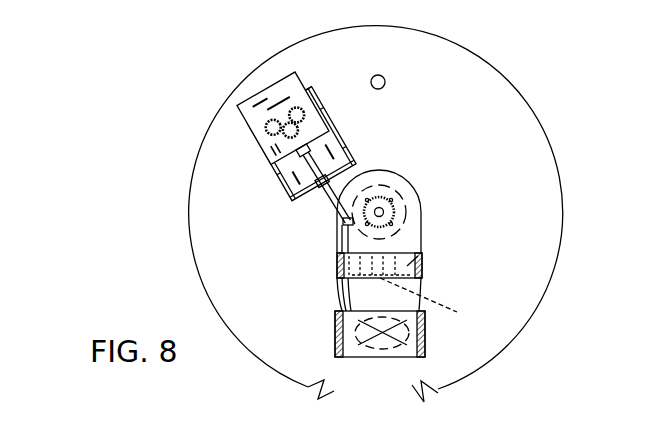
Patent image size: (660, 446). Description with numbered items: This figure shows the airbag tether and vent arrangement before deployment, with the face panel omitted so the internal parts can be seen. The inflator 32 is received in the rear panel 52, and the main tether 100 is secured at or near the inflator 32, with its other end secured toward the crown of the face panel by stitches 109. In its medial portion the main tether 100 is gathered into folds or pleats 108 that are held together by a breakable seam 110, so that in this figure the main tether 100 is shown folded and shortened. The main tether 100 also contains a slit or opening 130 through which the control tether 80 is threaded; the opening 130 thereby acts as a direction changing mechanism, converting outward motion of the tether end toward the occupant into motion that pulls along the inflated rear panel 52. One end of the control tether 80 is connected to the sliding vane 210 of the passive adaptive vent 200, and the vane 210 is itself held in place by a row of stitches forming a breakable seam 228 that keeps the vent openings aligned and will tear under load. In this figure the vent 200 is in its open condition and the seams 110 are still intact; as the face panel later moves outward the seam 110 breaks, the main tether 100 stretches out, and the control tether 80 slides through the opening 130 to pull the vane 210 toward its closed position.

The rear panel 52 is at (233, 225).
The passive adaptive vent 200 is at (248, 166).
The breakable seam 228 is at (272, 92).
The sliding vane 210 is at (311, 73).
The control tether 80 is at (342, 207).
The slit or opening 130 is at (342, 222).
The inflator 32 is at (383, 212).
The folds or pleats 108 is at (418, 262).
The breakable seam 110 is at (338, 268).
The main tether 100 is at (420, 297).
The stitches 109 is at (397, 333).